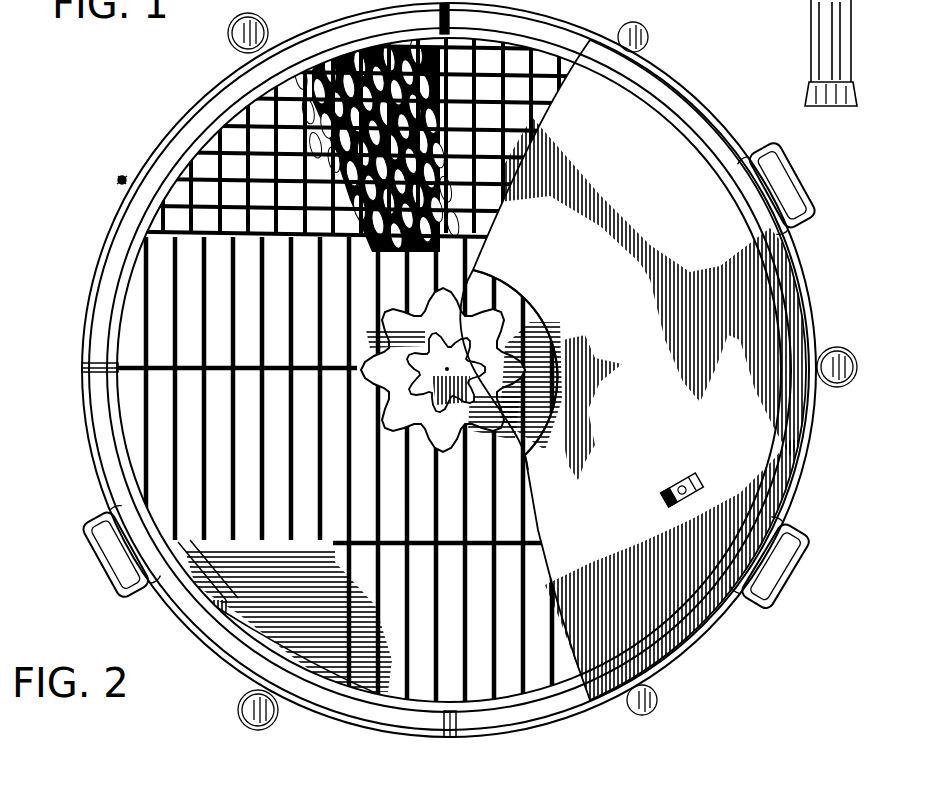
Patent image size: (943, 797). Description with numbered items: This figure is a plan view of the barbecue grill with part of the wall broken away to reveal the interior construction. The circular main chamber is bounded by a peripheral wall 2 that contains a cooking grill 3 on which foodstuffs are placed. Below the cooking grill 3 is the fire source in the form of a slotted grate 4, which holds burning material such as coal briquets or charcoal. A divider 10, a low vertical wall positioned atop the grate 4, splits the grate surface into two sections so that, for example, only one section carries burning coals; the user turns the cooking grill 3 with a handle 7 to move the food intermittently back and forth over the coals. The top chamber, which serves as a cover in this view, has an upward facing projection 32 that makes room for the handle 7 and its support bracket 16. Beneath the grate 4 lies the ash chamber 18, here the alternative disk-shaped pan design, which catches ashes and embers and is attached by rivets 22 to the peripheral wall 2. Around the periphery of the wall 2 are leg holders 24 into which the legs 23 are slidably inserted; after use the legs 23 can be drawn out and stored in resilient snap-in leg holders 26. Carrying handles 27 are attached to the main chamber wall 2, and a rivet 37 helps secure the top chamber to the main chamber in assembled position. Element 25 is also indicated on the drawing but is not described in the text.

The peripheral wall 2 is at (540, 35).
The cooking grill 3 is at (206, 412).
The slotted grate 4 is at (265, 130).
The handle 7 is at (446, 372).
The divider 10 is at (355, 119).
The support bracket 16 is at (440, 318).
The ash chamber 18 is at (291, 573).
The rivets 22 is at (95, 362).
The legs 23 is at (810, 40).
The leg holders 24 is at (228, 36).
The rim element 25 is at (311, 8).
The resilient snap-in leg holders 26 is at (667, 482).
The carrying handles 27 is at (785, 174).
The upward facing projection 32 is at (562, 330).
The rivet 37 is at (120, 176).